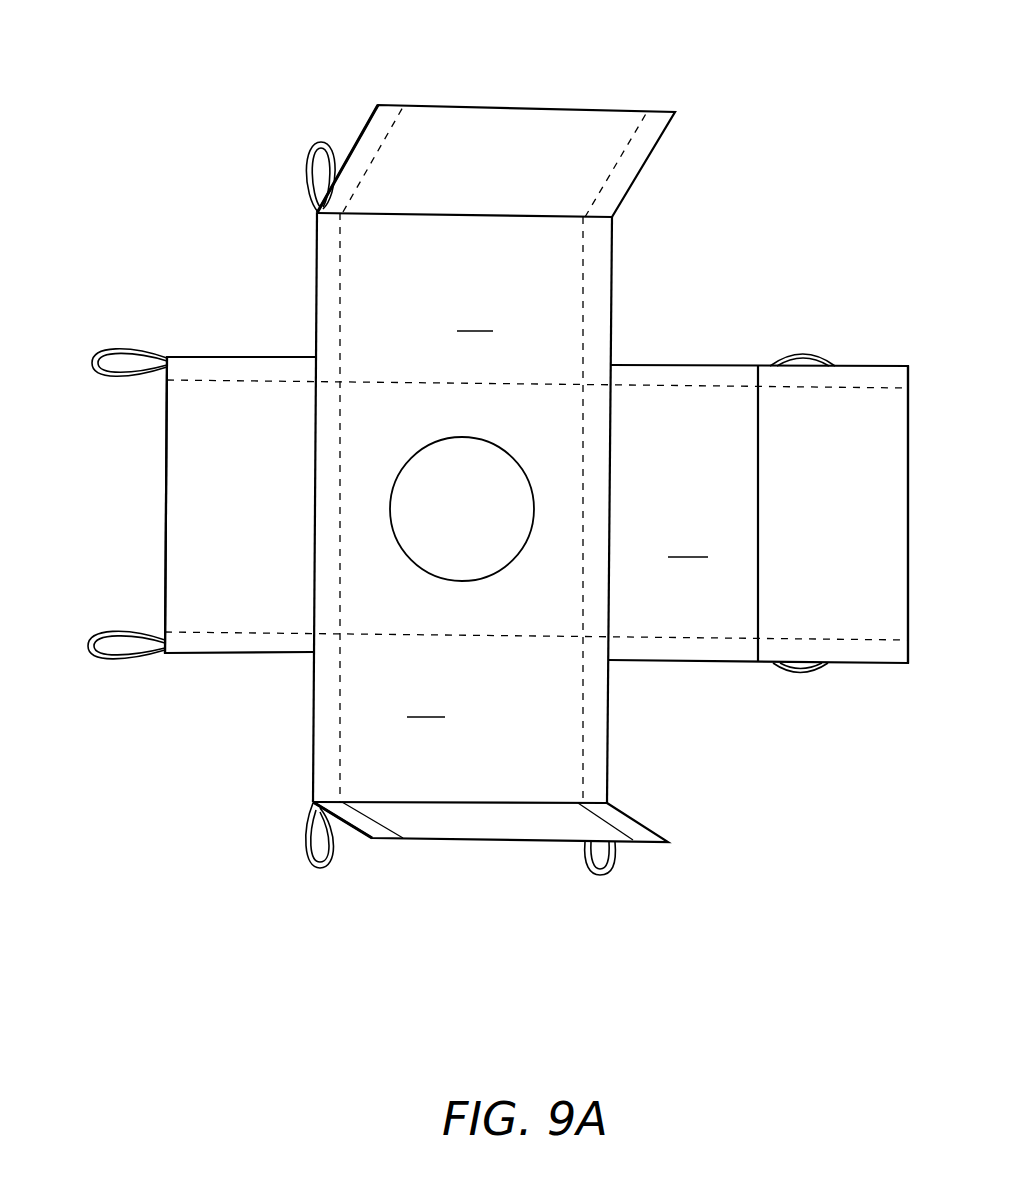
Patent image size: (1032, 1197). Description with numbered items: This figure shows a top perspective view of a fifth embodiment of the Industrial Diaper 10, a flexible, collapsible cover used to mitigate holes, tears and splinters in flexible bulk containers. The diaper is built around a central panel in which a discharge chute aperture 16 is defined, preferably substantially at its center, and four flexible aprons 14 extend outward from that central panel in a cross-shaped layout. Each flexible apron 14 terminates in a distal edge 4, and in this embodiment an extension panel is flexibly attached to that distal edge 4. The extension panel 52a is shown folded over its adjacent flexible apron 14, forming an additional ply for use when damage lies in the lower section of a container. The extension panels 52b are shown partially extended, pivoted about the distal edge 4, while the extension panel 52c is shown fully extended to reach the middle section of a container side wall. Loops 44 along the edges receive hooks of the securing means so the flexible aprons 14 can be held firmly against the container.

The Industrial Diaper 10 is at (665, 683).
The flexible apron 14 is at (560, 506).
The discharge chute aperture 16 is at (482, 520).
The distal edge 4 is at (536, 455).
The loop 44 is at (498, 537).
The extension panel 52a is at (278, 550).
The extension panel 52b is at (490, 138).
The extension panel 52c is at (880, 557).